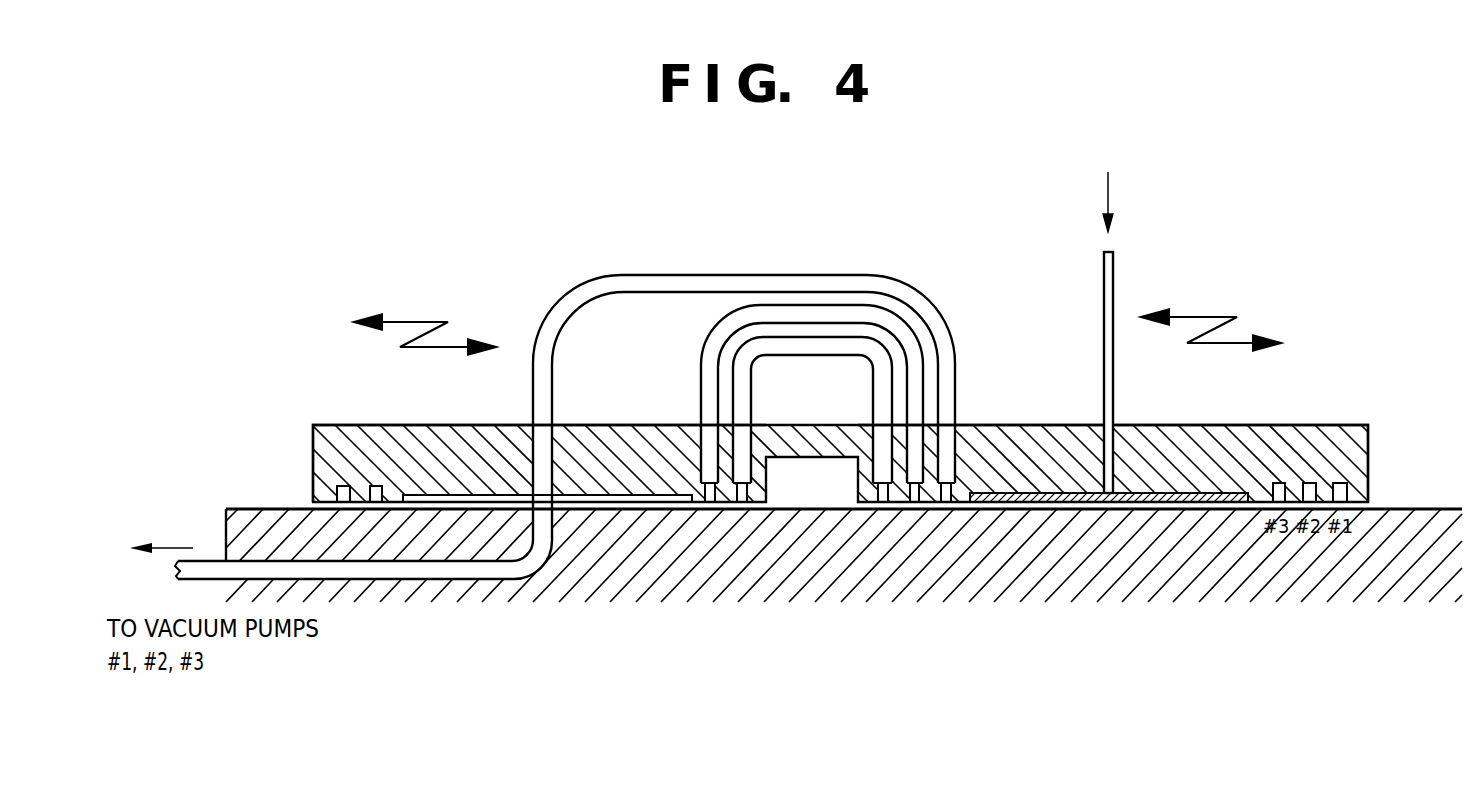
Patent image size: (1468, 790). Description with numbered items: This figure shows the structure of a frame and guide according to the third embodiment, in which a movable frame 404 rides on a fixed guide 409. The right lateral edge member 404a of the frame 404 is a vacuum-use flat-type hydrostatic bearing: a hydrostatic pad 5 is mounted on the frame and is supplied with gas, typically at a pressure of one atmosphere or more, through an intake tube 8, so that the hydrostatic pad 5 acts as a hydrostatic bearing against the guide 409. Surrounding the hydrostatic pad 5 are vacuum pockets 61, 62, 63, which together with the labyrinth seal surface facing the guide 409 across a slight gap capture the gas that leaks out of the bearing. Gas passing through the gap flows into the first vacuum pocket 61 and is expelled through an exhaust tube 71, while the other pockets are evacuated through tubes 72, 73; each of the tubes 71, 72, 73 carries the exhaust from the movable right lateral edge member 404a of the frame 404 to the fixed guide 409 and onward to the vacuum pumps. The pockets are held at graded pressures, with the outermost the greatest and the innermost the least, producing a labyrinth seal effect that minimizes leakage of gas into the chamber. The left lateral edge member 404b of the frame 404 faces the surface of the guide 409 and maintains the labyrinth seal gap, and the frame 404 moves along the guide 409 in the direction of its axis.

The frame 404 is at (330, 418).
The right lateral edge member 404a is at (1032, 460).
The left lateral edge member 404b is at (633, 457).
The exhaust tube 71 is at (820, 345).
The tube 72 is at (863, 315).
The tube 73 is at (907, 298).
The intake tube 8 is at (1114, 266).
The hydrostatic pad 5 is at (1182, 493).
The first vacuum pocket 61 is at (1350, 483).
The second vacuum pocket 62 is at (1315, 483).
The third vacuum pocket 63 is at (1280, 483).
The guide 409 is at (1332, 577).